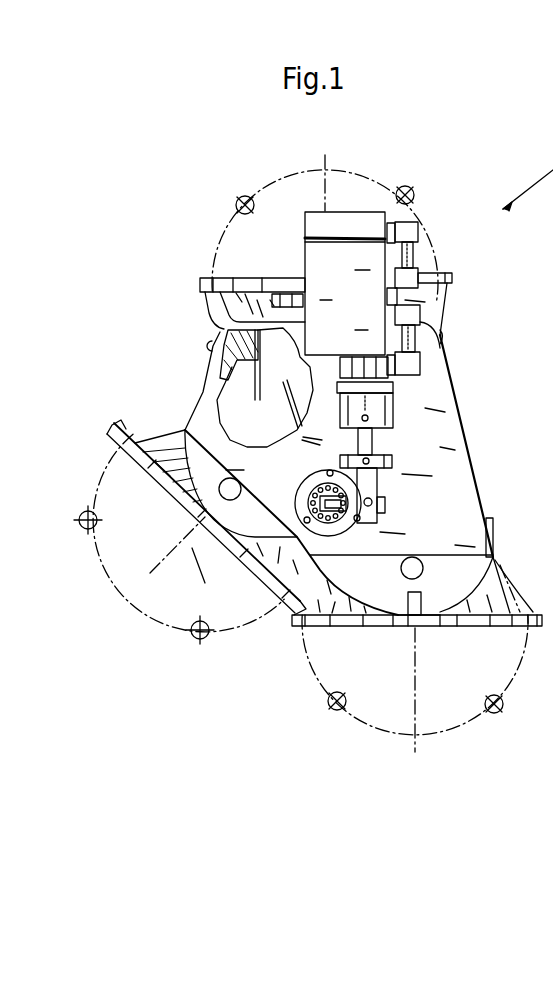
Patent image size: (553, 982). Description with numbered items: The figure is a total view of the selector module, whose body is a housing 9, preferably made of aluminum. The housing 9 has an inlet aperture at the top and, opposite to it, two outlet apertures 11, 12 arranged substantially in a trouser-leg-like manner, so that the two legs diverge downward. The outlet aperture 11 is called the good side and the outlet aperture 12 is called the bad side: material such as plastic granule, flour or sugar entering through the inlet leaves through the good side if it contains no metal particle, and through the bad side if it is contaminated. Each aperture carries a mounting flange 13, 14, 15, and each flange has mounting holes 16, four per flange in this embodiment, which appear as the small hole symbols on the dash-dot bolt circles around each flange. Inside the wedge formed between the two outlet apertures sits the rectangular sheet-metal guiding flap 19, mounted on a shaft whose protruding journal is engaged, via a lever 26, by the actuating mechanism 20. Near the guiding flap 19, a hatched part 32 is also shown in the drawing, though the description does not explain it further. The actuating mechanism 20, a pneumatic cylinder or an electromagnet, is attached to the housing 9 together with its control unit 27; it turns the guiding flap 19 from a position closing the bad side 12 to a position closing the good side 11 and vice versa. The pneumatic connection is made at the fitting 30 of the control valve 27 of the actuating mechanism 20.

The housing 9 is at (440, 453).
The outlet aperture (good side) 11 is at (435, 634).
The outlet aperture (bad side) 12 is at (210, 532).
The mounting flange 13 is at (437, 279).
The mounting flange 14 is at (258, 552).
The mounting flange 15 is at (370, 625).
The mounting holes 16 is at (407, 193).
The guiding flap 19 is at (291, 396).
The actuating mechanism 20 is at (398, 407).
The lever 26 is at (390, 500).
The control unit (control valve) 27 is at (327, 263).
The fitting 30 is at (277, 288).
The bolt 32 is at (254, 388).